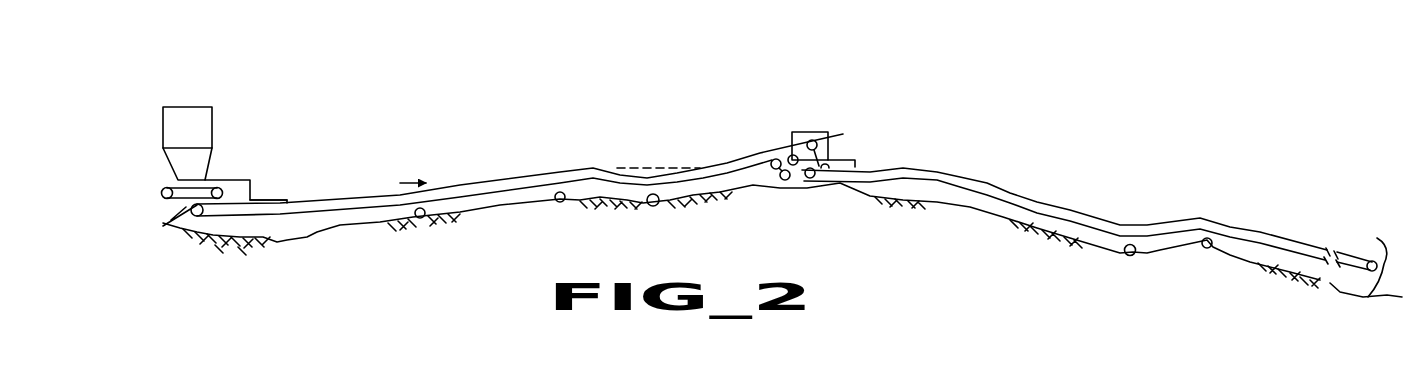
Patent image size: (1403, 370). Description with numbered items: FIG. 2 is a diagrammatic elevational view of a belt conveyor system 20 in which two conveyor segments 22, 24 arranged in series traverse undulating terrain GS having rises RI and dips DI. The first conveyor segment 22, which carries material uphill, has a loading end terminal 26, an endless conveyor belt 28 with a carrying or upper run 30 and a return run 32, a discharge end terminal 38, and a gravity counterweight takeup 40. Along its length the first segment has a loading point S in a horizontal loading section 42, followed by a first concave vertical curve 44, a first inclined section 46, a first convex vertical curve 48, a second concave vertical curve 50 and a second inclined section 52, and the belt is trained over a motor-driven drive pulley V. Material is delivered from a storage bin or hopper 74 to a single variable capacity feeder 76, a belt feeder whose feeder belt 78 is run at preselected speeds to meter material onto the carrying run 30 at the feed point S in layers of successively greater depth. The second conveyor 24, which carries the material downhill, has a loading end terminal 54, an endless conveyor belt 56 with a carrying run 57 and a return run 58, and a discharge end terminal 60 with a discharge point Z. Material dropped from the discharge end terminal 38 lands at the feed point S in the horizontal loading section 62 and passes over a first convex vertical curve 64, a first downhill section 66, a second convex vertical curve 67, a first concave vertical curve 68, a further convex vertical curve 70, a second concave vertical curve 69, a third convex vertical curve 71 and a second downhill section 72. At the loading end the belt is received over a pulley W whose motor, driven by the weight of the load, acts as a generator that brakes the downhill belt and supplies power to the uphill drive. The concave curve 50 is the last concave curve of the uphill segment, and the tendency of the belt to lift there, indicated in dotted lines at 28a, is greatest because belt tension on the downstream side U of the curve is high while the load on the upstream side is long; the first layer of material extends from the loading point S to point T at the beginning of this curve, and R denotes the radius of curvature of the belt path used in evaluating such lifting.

The belt conveyor system 20 is at (503, 107).
The first conveyor belt segment 22 is at (447, 185).
The second belt conveyor 24 is at (900, 186).
The loading end terminal 26 is at (165, 224).
The endless conveyor belt 28 is at (376, 196).
The lifted belt position 28a is at (627, 167).
The carrying run 30 is at (517, 184).
The return run 32 is at (516, 200).
The discharge end terminal 38 is at (832, 146).
The gravity takeup 40 is at (770, 185).
The horizontal loading section 42 is at (258, 200).
The first concave vertical curve 44 is at (315, 203).
The first inclined section 46 is at (463, 190).
The first convex vertical curve 48 is at (595, 169).
The second concave vertical curve 50 is at (680, 169).
The second inclined section 52 is at (749, 155).
The loading end terminal 54 is at (808, 178).
The endless conveyor belt 56 is at (936, 186).
The carrying run 57 is at (1262, 228).
The return run 58 is at (1262, 228).
The discharge end terminal 60 is at (1367, 297).
The horizontal loading section 62 is at (852, 170).
The first convex vertical curve 64 is at (880, 169).
The first downhill section 66 is at (943, 177).
The second convex vertical curve 67 is at (990, 184).
The first concave vertical curve 68 is at (1027, 199).
The second concave vertical curve 69 is at (1150, 224).
The second convex vertical curve 70 is at (1068, 206).
The third convex vertical curve 71 is at (1200, 219).
The second downhill section 72 is at (1270, 234).
The storage bin or hopper 74 is at (180, 112).
The variable capacity feeder 76 is at (172, 187).
The feeder belt 78 is at (172, 203).
The loading point S is at (228, 199).
The point T is at (610, 168).
The radius of curvature R is at (653, 166).
The downstream side of curve U is at (691, 172).
The drive pulley V is at (813, 140).
The pulley W is at (803, 169).
The discharge point Z is at (1372, 259).
The undulating terrain GS is at (420, 219).
The rises RI is at (561, 203).
The dips DI is at (654, 207).